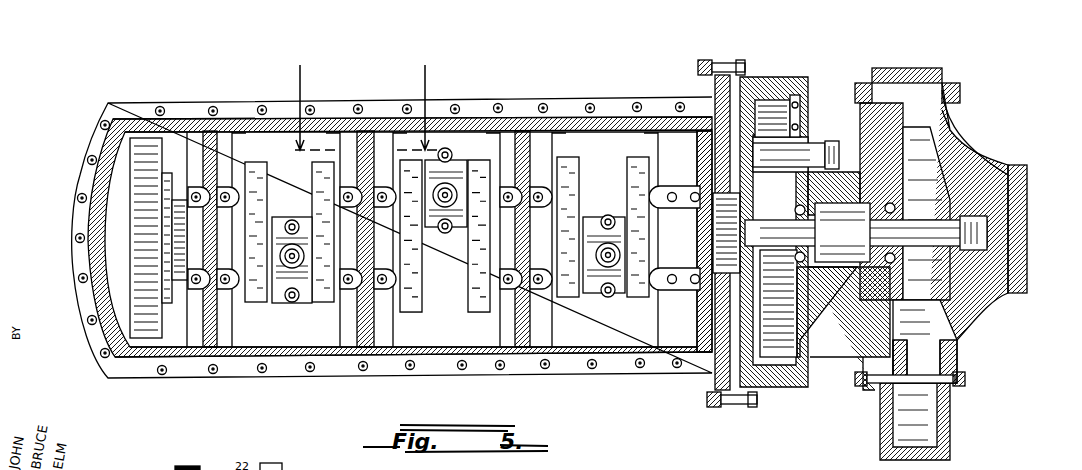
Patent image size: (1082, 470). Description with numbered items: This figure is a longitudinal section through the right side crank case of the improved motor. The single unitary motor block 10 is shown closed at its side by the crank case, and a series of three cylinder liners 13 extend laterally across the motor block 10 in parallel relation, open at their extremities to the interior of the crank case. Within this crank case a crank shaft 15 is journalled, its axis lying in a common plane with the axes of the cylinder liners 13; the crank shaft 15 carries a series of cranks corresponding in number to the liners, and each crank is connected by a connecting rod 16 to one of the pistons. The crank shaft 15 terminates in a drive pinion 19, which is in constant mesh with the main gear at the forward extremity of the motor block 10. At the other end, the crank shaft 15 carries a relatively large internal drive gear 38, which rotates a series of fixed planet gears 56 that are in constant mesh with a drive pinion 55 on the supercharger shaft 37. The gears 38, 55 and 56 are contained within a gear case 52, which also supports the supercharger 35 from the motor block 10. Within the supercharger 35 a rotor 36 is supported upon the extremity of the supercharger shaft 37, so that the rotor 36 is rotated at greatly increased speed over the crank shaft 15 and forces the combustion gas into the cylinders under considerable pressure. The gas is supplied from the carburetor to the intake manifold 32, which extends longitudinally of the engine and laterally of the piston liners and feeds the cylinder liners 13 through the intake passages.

The motor block 10 is at (526, 116).
The cylinder liners 13 is at (458, 80).
The crank shaft 15 is at (336, 231).
The connecting rod 16 is at (275, 290).
The drive pinion 19 is at (131, 257).
The gear case 52 is at (758, 77).
The internal drive gear 38 is at (770, 118).
The planet gears 56 is at (808, 110).
The drive pinion 55 is at (813, 143).
The rotor 36 is at (935, 160).
The supercharger shaft 37 is at (990, 214).
The supercharger 35 is at (950, 330).
The intake manifold 32 is at (920, 428).